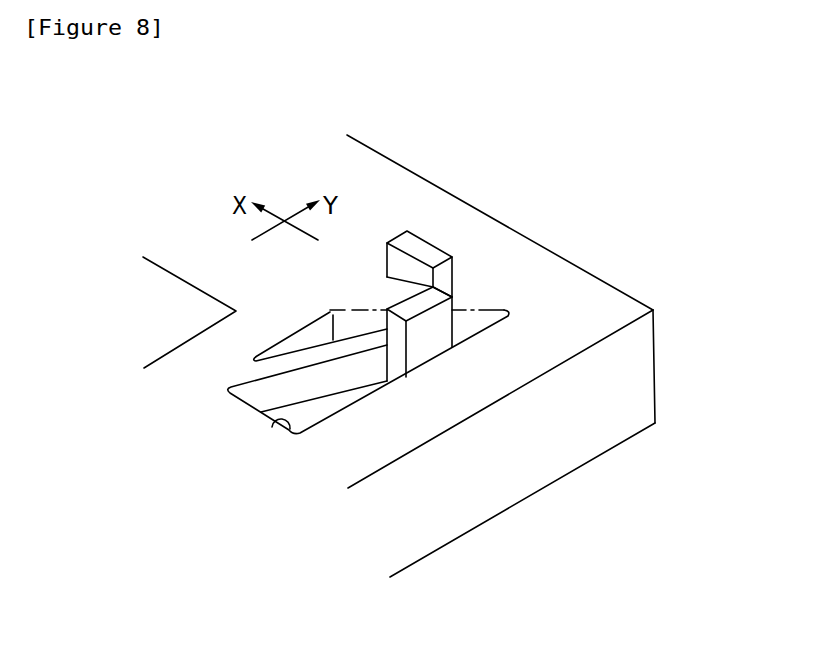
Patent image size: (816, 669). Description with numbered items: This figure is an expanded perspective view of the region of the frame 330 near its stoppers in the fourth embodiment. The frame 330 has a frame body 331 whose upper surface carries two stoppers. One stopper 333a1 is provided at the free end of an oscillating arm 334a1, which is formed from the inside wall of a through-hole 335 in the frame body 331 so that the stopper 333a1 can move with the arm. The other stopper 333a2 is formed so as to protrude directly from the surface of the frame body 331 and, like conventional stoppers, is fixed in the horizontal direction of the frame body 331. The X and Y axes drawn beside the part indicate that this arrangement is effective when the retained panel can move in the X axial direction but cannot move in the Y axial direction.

The frame 330 is at (405, 144).
The frame body 331 is at (433, 185).
The stopper 333a1 is at (422, 343).
The stopper 333a2 is at (428, 248).
The oscillating arm 334a1 is at (320, 383).
The through-hole 335 is at (273, 418).